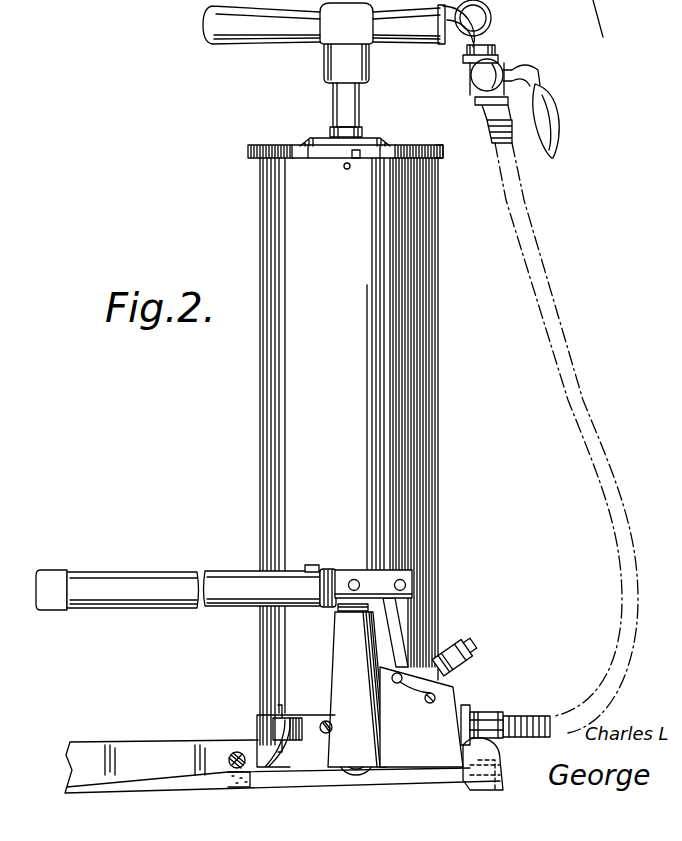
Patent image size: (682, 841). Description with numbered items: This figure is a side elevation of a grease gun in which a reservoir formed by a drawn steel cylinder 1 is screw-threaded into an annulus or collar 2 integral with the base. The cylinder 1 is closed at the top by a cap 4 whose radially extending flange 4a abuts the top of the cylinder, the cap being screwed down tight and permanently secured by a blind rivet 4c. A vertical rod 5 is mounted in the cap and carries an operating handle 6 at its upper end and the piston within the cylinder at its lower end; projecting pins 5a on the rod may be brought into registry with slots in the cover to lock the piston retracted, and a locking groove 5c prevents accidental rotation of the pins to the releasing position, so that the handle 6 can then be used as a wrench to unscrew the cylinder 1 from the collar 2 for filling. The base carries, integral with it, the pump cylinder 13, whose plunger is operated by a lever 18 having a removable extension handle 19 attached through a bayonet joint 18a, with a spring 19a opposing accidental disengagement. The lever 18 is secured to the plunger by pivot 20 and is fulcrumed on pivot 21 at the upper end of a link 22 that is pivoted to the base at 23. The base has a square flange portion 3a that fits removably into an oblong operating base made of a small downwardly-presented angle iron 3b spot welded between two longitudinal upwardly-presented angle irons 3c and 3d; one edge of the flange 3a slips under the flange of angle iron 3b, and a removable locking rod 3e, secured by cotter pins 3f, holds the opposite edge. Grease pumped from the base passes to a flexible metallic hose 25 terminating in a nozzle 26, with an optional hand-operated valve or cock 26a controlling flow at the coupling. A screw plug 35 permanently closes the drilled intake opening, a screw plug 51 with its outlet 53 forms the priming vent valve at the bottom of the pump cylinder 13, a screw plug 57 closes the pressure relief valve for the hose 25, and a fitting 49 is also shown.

The cylinder 1 is at (440, 342).
The annulus or collar 2 is at (277, 717).
The square flange portion 3a is at (312, 773).
The angle iron 3b is at (497, 770).
The angle iron 3c is at (112, 722).
The angle iron 3d is at (480, 750).
The locking rod 3e is at (228, 760).
The cotter pins 3f is at (237, 751).
The cap 4 is at (400, 148).
The radially extending flange 4a is at (443, 152).
The blind rivet 4c is at (345, 167).
The vertical rod 5 is at (356, 130).
The pins 5a is at (340, 143).
The locking groove 5c is at (357, 160).
The operating handle 6 is at (222, 32).
The pump cylinder 13 is at (355, 647).
The lever 18 is at (400, 577).
The bayonet joint 18a is at (313, 570).
The extension handle 19 is at (225, 595).
The spring 19a is at (333, 568).
The pivot 20 is at (357, 583).
The pivot 21 is at (404, 585).
The link 22 is at (397, 622).
The pivot 23 is at (462, 686).
The flexible metallic hose 25 is at (573, 388).
The nozzle 26 is at (510, 23).
The hand-operated valve or cock 26a is at (485, 72).
The screw plug 35 is at (384, 800).
The hose fitting 49 is at (487, 720).
The screw plug 51 is at (277, 727).
The outlet 53 is at (323, 722).
The screw plug 57 is at (460, 653).